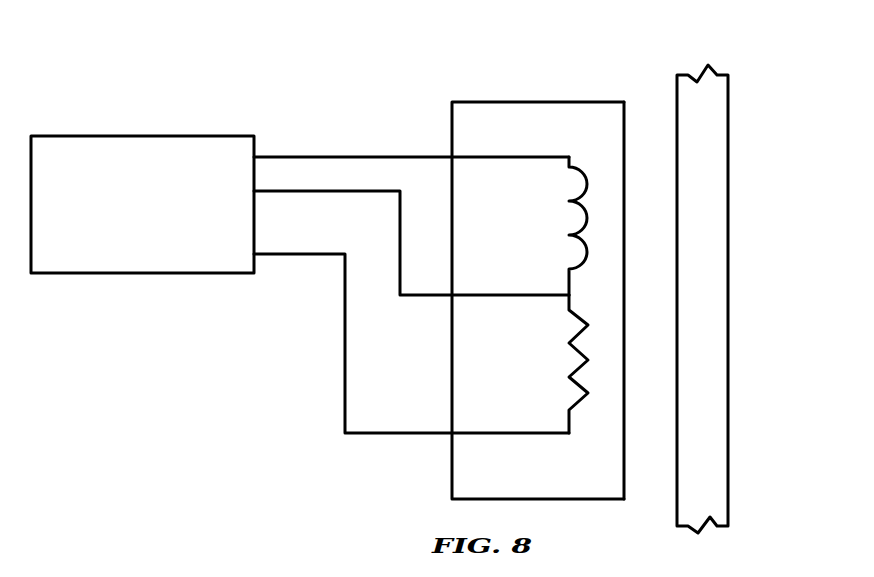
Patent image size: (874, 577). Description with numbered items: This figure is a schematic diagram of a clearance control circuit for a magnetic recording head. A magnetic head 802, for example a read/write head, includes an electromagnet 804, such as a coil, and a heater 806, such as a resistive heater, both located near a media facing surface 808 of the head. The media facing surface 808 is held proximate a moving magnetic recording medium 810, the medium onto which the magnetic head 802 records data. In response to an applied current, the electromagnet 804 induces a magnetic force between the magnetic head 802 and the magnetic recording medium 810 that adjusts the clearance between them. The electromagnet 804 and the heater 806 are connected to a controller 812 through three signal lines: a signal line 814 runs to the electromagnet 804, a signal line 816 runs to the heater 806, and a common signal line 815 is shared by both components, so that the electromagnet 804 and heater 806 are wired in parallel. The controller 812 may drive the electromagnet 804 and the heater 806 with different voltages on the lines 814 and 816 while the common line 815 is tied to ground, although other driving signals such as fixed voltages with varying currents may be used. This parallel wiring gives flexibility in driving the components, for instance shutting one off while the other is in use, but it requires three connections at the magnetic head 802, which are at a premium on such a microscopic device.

The magnetic head 802 is at (595, 110).
The electromagnet 804 is at (577, 232).
The heater 806 is at (577, 358).
The media facing surface 808 is at (622, 470).
The magnetic recording medium 810 is at (705, 203).
The controller 812 is at (183, 142).
The signal line 814 is at (318, 157).
The common signal line 815 is at (312, 192).
The signal line 816 is at (328, 254).